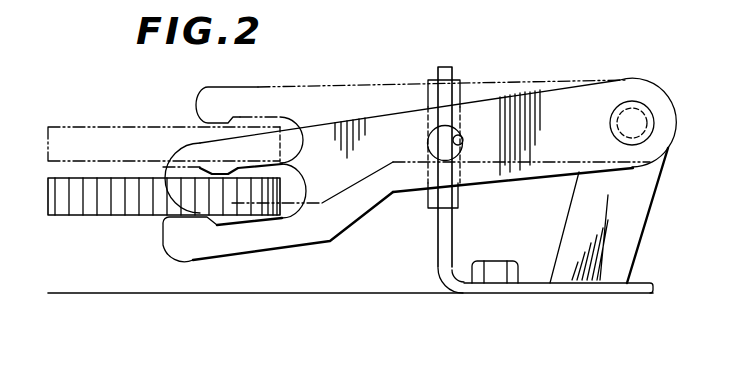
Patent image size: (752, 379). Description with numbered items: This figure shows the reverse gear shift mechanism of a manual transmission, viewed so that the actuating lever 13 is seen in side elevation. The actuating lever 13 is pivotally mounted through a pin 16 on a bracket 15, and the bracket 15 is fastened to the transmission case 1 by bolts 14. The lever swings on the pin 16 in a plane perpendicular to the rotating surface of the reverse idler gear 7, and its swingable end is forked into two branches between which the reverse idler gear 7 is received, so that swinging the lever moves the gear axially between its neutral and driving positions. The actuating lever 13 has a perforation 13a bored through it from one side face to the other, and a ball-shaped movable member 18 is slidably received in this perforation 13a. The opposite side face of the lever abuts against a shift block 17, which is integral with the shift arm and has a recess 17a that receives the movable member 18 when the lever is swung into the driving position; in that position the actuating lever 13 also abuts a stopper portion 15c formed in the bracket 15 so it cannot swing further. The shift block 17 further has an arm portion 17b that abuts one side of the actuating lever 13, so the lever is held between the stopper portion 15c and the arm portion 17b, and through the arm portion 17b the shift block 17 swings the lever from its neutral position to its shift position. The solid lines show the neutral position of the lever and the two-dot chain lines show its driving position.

The transmission case 1 is at (300, 291).
The reverse idler gear 7 is at (76, 217).
The actuating lever 13 is at (568, 87).
The perforation 13a is at (462, 134).
The bolts 14 is at (513, 273).
The bracket 15 is at (592, 288).
The stopper portion 15c is at (445, 86).
The pin 16 is at (645, 104).
The shift block 17 is at (453, 80).
The recess 17a is at (428, 128).
The arm portion 17b is at (432, 198).
The movable member 18 is at (428, 145).